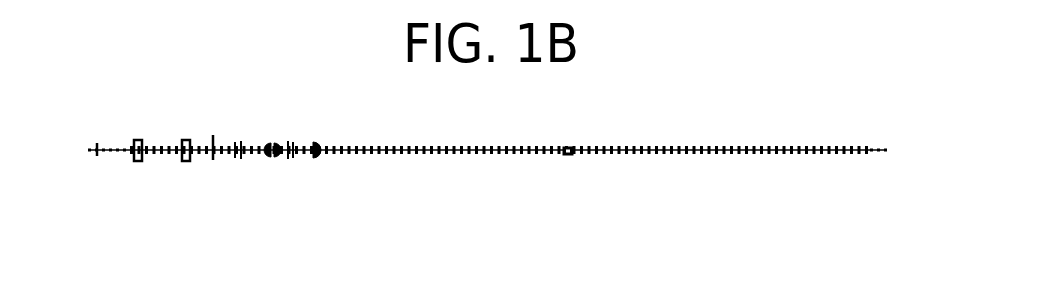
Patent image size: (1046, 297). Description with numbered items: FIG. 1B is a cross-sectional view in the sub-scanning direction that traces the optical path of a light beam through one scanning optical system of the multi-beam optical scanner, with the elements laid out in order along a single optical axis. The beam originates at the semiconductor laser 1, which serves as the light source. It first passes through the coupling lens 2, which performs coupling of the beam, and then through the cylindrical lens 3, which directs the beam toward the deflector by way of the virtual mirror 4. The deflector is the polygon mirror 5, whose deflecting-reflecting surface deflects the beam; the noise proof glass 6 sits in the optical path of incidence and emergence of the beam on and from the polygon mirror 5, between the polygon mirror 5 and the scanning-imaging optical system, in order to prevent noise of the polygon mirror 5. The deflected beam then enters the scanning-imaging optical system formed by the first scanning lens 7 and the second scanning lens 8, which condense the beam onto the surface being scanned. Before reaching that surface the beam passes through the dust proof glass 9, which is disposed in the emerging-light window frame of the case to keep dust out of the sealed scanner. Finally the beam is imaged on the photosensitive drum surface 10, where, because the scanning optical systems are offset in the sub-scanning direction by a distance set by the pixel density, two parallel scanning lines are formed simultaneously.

The semiconductor laser 1 is at (92, 166).
The coupling lens 2 is at (134, 166).
The cylindrical lens 3 is at (182, 167).
The virtual mirror 4 is at (207, 166).
The polygon mirror 5 is at (265, 167).
The noise proof glass 6 is at (234, 166).
The first scanning lens 7 is at (314, 167).
The second scanning lens 8 is at (561, 166).
The dust proof glass 9 is at (716, 163).
The photosensitive drum surface 10 is at (879, 159).